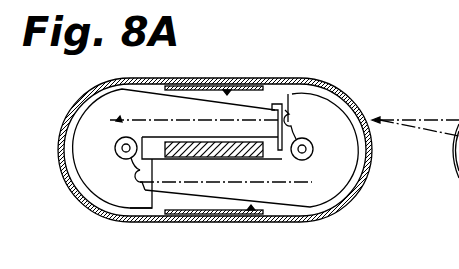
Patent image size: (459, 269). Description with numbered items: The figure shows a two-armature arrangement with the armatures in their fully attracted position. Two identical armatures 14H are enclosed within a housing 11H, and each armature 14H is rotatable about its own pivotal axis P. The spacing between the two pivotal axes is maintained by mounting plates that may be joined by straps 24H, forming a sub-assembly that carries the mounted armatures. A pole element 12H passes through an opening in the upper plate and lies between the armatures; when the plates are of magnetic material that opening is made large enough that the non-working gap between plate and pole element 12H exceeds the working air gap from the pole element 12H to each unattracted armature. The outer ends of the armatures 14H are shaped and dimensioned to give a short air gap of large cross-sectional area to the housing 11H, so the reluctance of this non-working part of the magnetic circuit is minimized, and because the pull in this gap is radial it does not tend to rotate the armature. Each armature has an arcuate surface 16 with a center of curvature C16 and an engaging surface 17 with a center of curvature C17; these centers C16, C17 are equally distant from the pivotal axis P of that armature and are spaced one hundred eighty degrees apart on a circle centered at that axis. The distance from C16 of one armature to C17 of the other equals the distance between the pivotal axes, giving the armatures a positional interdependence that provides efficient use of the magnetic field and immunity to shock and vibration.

The housing 11H is at (373, 157).
The armature 14H is at (80, 157).
The engaging surface 17 is at (272, 108).
The arcuate surface 16 is at (290, 120).
The pole element 12H is at (215, 157).
The strap 24H is at (230, 84).
The pivotal axis P is at (119, 140).
The center of curvature of surface 16 C16 is at (292, 122).
The center of curvature of engaging surface 17 C17 is at (128, 138).